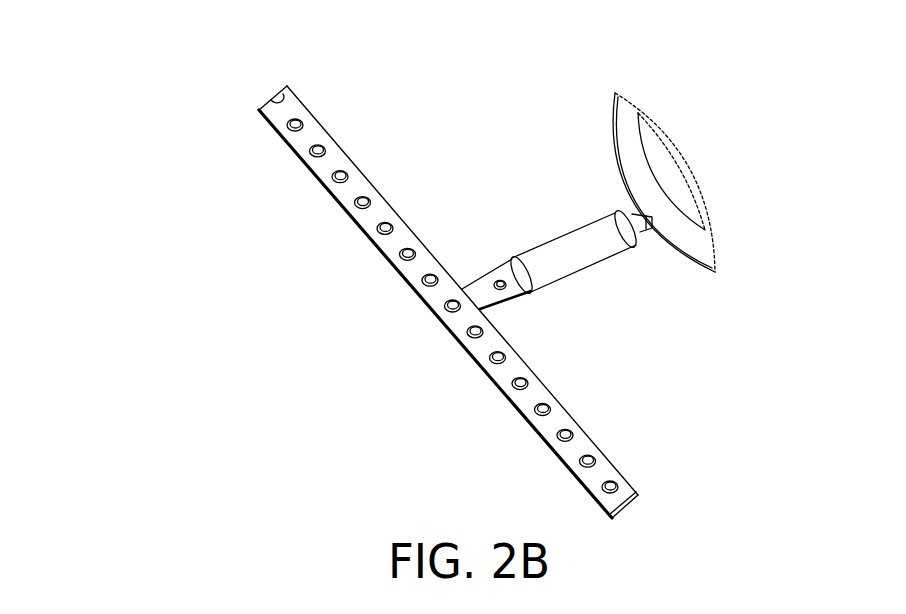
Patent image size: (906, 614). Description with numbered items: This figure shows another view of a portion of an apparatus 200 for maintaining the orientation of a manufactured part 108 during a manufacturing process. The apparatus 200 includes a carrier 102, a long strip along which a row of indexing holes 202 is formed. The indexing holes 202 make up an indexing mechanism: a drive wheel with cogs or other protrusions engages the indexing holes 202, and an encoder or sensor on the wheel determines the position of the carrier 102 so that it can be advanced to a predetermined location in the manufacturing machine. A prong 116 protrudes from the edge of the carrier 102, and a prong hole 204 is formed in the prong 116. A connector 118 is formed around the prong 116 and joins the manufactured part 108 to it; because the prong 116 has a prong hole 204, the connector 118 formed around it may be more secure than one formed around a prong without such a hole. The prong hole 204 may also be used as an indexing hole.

The apparatus 200 is at (160, 61).
The carrier 102 is at (300, 150).
The indexing holes 202 is at (363, 203).
The prong 116 is at (482, 279).
The prong hole 204 is at (504, 288).
The connector 118 is at (581, 231).
The manufactured part 108 is at (688, 252).